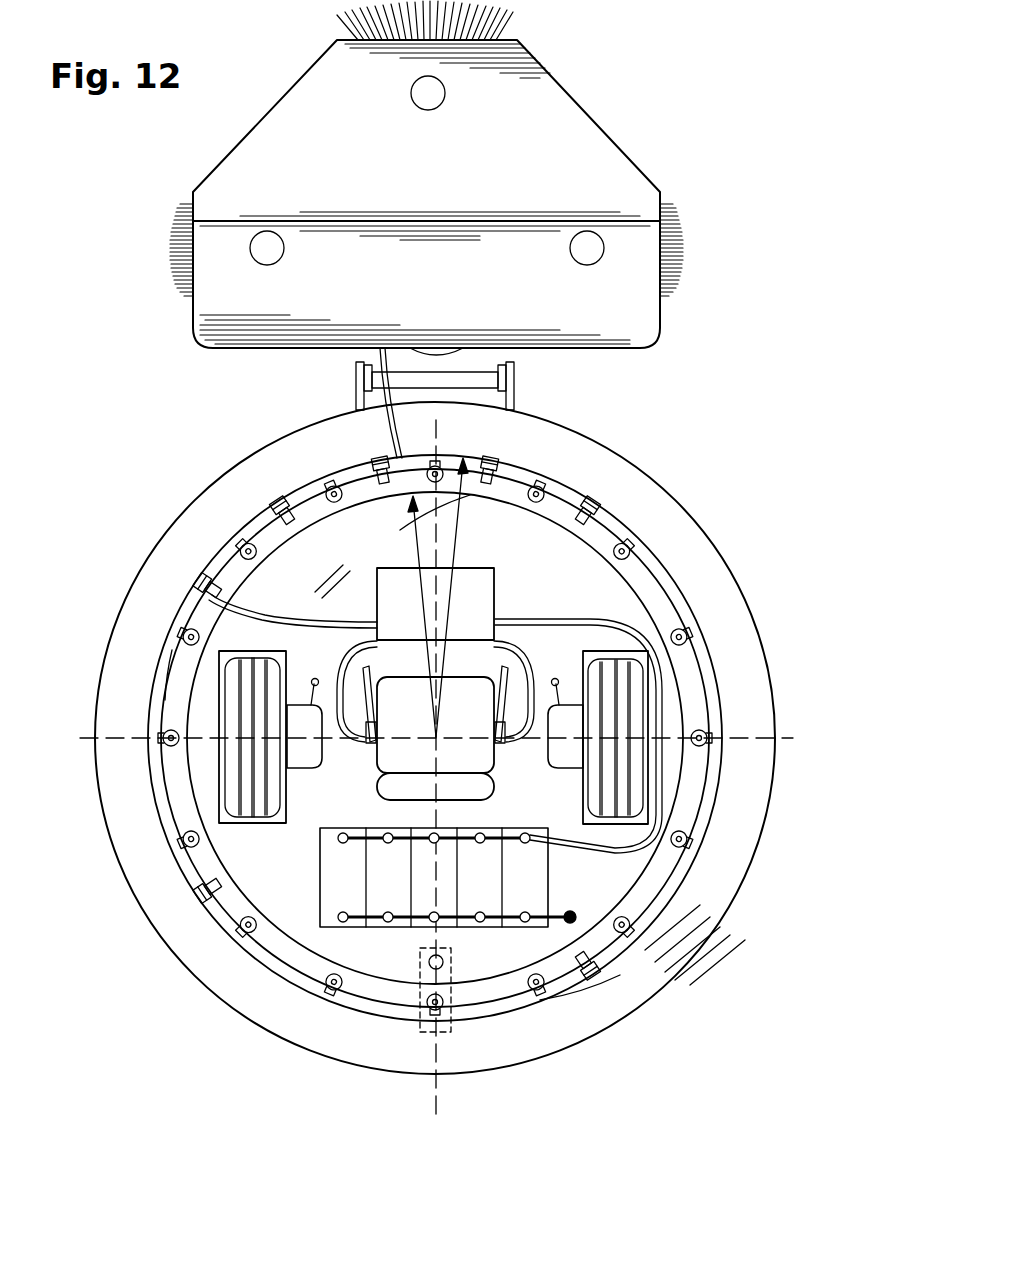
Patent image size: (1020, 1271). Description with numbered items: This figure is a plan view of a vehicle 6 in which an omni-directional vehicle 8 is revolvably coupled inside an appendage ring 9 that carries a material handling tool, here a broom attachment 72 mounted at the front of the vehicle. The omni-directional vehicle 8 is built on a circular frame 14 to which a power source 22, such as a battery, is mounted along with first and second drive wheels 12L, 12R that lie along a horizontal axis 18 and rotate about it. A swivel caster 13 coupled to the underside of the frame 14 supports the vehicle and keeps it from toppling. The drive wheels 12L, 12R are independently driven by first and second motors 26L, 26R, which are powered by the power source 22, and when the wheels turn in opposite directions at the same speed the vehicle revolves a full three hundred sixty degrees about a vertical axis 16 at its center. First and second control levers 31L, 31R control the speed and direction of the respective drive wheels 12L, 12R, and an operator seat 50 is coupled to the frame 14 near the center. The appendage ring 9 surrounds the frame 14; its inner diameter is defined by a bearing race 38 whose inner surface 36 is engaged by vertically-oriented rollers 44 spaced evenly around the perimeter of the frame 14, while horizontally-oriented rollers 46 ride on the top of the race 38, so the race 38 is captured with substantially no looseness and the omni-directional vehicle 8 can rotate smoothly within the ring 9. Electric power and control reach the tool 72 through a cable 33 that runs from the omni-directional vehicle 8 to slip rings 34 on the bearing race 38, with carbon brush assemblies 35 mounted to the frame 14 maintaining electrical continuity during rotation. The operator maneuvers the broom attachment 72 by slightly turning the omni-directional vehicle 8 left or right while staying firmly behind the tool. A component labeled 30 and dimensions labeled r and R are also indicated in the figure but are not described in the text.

The vehicle 6 is at (183, 1075).
The omni-directional vehicle 8 is at (500, 522).
The appendage ring 9 is at (615, 468).
The first drive wheel 12L is at (248, 823).
The second drive wheel 12R is at (622, 818).
The swivel caster 13 is at (448, 964).
The circular frame 14 is at (700, 658).
The vertical axis 16 is at (436, 736).
The horizontal axis 18 is at (783, 741).
The power source 22 is at (550, 884).
The first motor 26L is at (308, 770).
The second motor 26R is at (578, 772).
The control unit 30 is at (497, 615).
The first control lever 31L is at (365, 673).
The second control lever 31R is at (506, 673).
The electric power and control lines 33 is at (400, 431).
The slip rings 34 is at (178, 660).
The carbon brush assemblies 35 is at (212, 588).
The inner surface of bearing race 36 is at (157, 933).
The bearing race 38 is at (573, 988).
The vertically-oriented rollers 44 is at (336, 1000).
The horizontally-oriented rollers 46 is at (592, 968).
The operator seat 50 is at (494, 776).
The broom attachment 72 is at (603, 137).
The inner radius r is at (415, 543).
The outer radius R is at (453, 551).